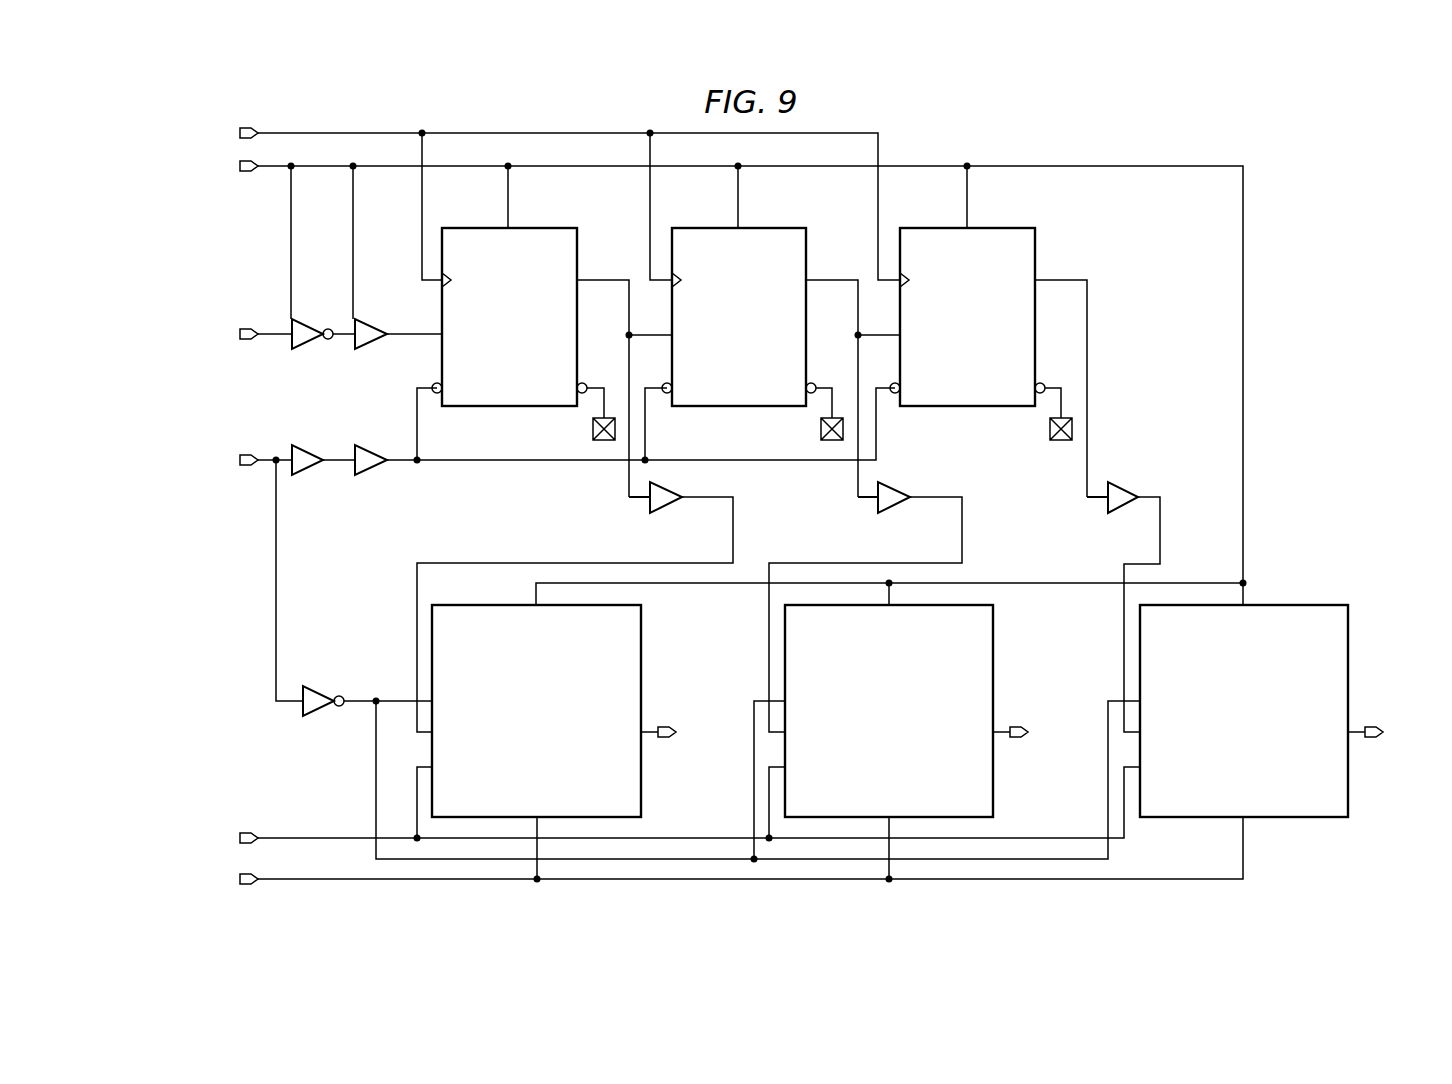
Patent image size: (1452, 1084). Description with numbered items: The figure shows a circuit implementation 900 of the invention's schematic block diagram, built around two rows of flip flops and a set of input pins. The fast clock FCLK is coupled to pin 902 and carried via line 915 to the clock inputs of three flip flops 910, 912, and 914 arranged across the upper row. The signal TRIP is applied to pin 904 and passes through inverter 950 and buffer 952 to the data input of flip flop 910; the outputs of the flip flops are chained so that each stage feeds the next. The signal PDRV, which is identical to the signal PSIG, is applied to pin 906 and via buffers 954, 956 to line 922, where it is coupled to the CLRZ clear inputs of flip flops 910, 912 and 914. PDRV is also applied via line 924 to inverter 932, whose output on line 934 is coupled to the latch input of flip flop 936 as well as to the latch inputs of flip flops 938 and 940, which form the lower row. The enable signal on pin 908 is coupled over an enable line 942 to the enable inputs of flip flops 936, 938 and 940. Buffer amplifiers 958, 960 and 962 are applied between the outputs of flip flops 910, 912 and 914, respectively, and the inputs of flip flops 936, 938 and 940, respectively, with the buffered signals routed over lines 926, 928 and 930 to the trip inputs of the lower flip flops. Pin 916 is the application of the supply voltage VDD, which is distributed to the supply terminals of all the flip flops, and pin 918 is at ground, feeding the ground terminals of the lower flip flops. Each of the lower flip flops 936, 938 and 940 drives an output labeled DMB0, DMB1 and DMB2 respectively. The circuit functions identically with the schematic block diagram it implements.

The hold-eight latch circuit 900 is at (1333, 139).
The pin 902 is at (247, 126).
The pin 904 is at (249, 344).
The pin 906 is at (249, 470).
The pin 908 is at (249, 830).
The flip flop 910 is at (542, 227).
The flip flop 912 is at (772, 227).
The flip flop 914 is at (1001, 227).
The line 915 is at (321, 129).
The pin 916 is at (249, 178).
The pin 918 is at (249, 890).
The line 922 is at (529, 462).
The line 924 is at (276, 580).
The first trip output line 926 is at (733, 532).
The second trip output line 928 is at (962, 532).
The third trip output line 930 is at (1160, 535).
The inverter 932 is at (320, 713).
The line 934 is at (397, 697).
The flip flop 936 is at (641, 680).
The flip flop 938 is at (993, 680).
The flip flop 940 is at (1348, 682).
The enable signal line 942 is at (320, 834).
The inverter 950 is at (308, 344).
The buffer 952 is at (371, 344).
The buffer 954 is at (308, 470).
The buffer 956 is at (371, 470).
The buffer amplifier 958 is at (666, 507).
The buffer amplifier 960 is at (894, 507).
The buffer amplifier 962 is at (1122, 488).